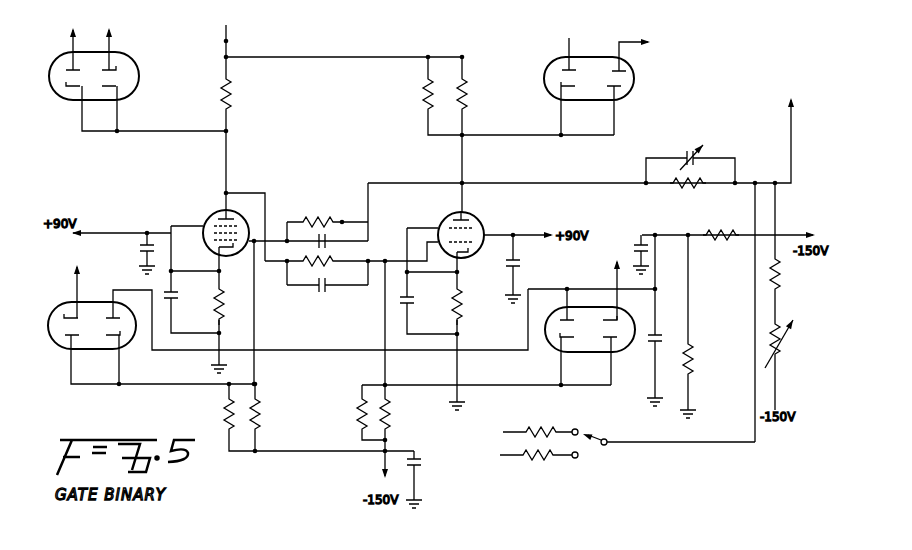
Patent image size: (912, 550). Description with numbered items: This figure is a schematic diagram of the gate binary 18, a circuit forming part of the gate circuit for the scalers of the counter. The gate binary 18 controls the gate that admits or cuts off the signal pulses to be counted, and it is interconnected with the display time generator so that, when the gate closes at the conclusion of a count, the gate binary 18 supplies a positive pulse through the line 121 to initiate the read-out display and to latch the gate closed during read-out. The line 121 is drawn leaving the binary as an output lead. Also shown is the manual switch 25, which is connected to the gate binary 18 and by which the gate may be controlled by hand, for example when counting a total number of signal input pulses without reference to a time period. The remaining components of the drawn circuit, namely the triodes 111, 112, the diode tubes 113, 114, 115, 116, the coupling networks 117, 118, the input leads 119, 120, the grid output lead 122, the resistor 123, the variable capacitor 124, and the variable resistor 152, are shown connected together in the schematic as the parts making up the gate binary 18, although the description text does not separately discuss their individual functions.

The gate binary 18 is at (334, 109).
The manual switch 25 is at (600, 430).
The triode V307 111 is at (206, 226).
The triode V306 112 is at (484, 230).
The diode tube 6AL5 113 is at (62, 352).
The diode tube 6AL5 114 is at (551, 343).
The diode tube 6AL5 115 is at (139, 68).
The diode tube 6AL5 116 is at (551, 68).
The resistor-capacitor coupling network 117 is at (342, 219).
The resistor-capacitor coupling network 118 is at (303, 286).
The input lead 119 is at (85, 286).
The input lead 120 is at (614, 282).
The line 121 is at (228, 41).
The grid output lead 122 is at (532, 181).
The resistor 123 is at (675, 189).
The variable capacitor 124 is at (686, 152).
The variable resistor 152 is at (780, 362).